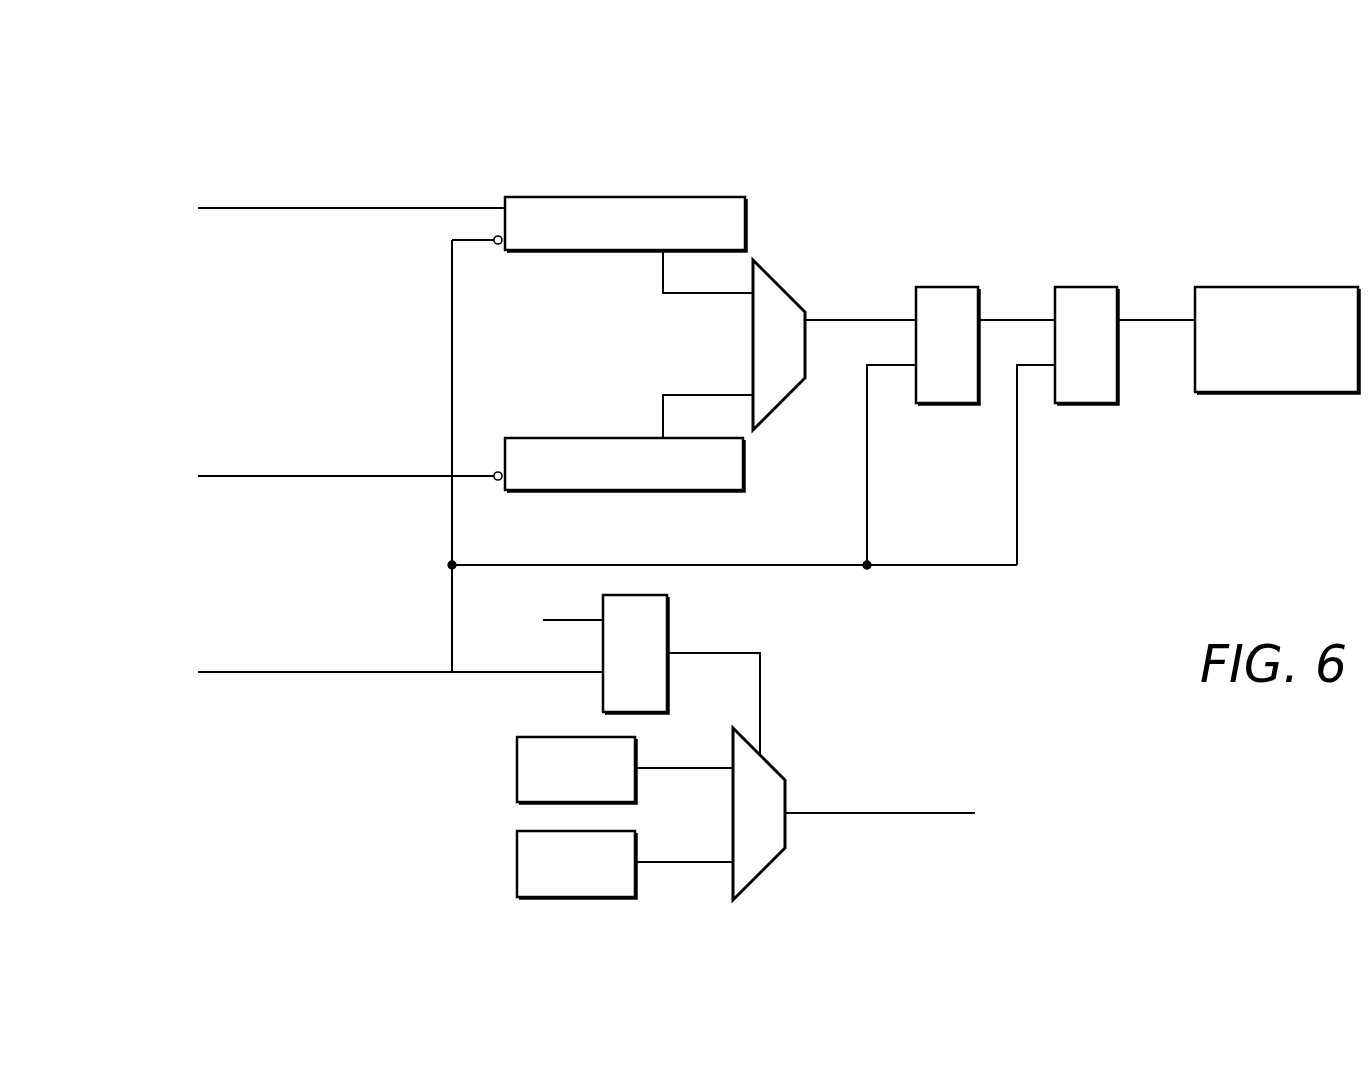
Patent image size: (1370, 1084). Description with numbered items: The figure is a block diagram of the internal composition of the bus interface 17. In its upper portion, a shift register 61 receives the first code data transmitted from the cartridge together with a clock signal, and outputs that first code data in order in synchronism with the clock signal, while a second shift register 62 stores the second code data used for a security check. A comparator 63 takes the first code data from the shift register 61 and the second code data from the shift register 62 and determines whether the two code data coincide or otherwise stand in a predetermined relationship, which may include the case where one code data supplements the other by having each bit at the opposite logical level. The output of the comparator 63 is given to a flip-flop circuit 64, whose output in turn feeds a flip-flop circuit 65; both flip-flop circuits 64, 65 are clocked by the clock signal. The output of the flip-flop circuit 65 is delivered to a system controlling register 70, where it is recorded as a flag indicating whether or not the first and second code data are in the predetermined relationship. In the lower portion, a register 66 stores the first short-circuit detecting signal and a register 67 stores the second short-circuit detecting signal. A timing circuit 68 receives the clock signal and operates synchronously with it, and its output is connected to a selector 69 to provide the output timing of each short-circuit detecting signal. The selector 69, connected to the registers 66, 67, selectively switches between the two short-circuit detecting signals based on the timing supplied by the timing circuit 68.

The bus interface 17 is at (823, 136).
The shift register 61 is at (650, 197).
The shift register 62 is at (743, 462).
The comparator 63 is at (780, 287).
The flip-flop circuit 64 is at (946, 287).
The flip-flop circuit 65 is at (1085, 287).
The register 66 is at (517, 768).
The register 67 is at (517, 863).
The timing circuit 68 is at (667, 622).
The selector 69 is at (762, 870).
The system controlling register 70 is at (1275, 287).